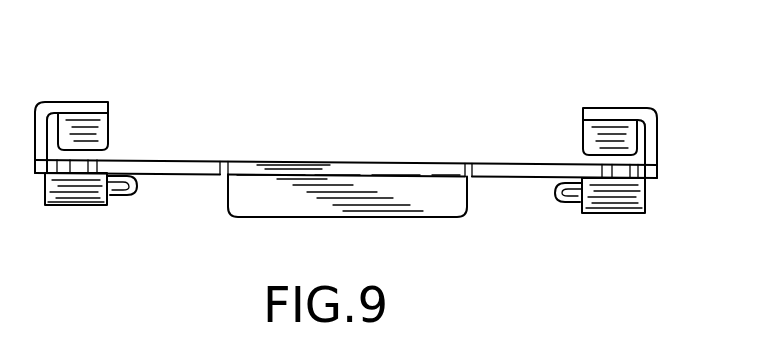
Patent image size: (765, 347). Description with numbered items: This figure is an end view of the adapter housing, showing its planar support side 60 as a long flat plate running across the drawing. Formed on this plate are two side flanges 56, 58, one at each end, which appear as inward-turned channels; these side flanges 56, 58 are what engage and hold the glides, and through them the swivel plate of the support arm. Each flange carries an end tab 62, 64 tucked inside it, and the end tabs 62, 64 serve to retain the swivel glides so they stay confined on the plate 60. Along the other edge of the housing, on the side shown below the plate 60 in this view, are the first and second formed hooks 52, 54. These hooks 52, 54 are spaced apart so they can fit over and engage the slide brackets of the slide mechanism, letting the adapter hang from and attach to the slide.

The first formed hook 52 is at (636, 184).
The second formed hook 54 is at (50, 180).
The side flange 56 is at (603, 107).
The side flange 58 is at (90, 100).
The planar support side 60 is at (498, 165).
The end tab 62 is at (597, 130).
The end tab 64 is at (100, 130).